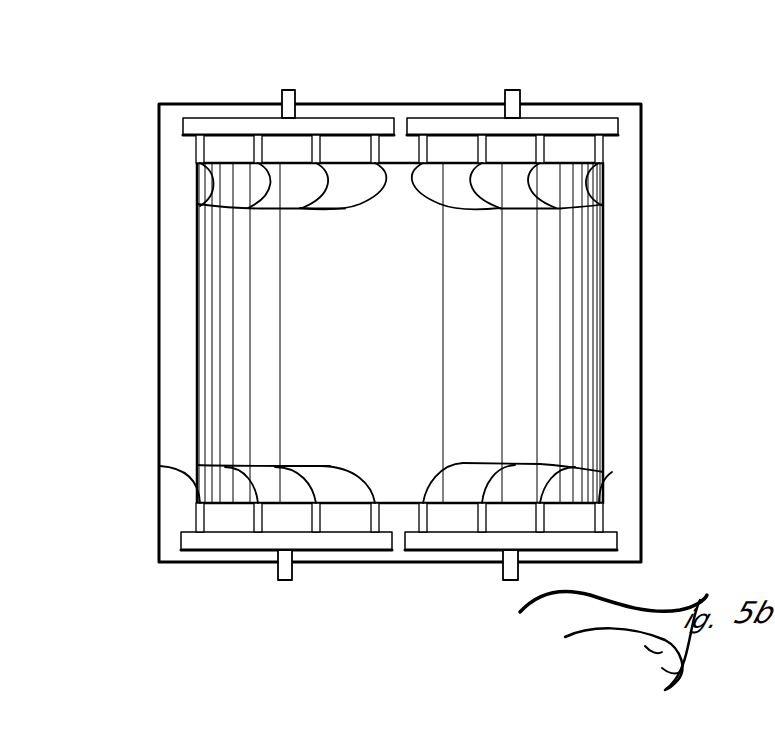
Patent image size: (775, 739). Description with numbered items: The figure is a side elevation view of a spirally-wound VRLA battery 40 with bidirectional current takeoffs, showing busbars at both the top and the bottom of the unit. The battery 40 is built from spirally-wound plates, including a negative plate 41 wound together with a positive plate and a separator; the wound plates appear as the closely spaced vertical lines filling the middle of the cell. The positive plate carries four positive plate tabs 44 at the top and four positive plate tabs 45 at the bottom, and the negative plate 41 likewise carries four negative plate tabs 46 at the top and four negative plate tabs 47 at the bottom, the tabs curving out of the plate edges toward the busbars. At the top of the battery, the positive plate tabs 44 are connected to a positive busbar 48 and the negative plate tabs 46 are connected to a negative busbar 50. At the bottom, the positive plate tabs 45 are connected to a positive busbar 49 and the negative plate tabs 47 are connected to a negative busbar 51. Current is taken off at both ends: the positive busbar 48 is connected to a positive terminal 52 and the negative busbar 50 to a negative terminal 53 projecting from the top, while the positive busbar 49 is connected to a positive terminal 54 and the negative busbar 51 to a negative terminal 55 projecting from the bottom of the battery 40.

The VRLA battery 40 is at (170, 84).
The negative plate 41 is at (197, 248).
The positive plate tabs 44 is at (197, 204).
The positive plate tabs 45 is at (197, 465).
The negative plate tabs 46 is at (603, 204).
The negative plate tabs 47 is at (603, 472).
The positive busbar 48 is at (337, 128).
The positive busbar 49 is at (300, 550).
The negative busbar 50 is at (495, 128).
The negative busbar 51 is at (470, 550).
The positive terminal 52 is at (292, 92).
The negative terminal 53 is at (511, 90).
The positive terminal 54 is at (285, 580).
The negative terminal 55 is at (510, 580).